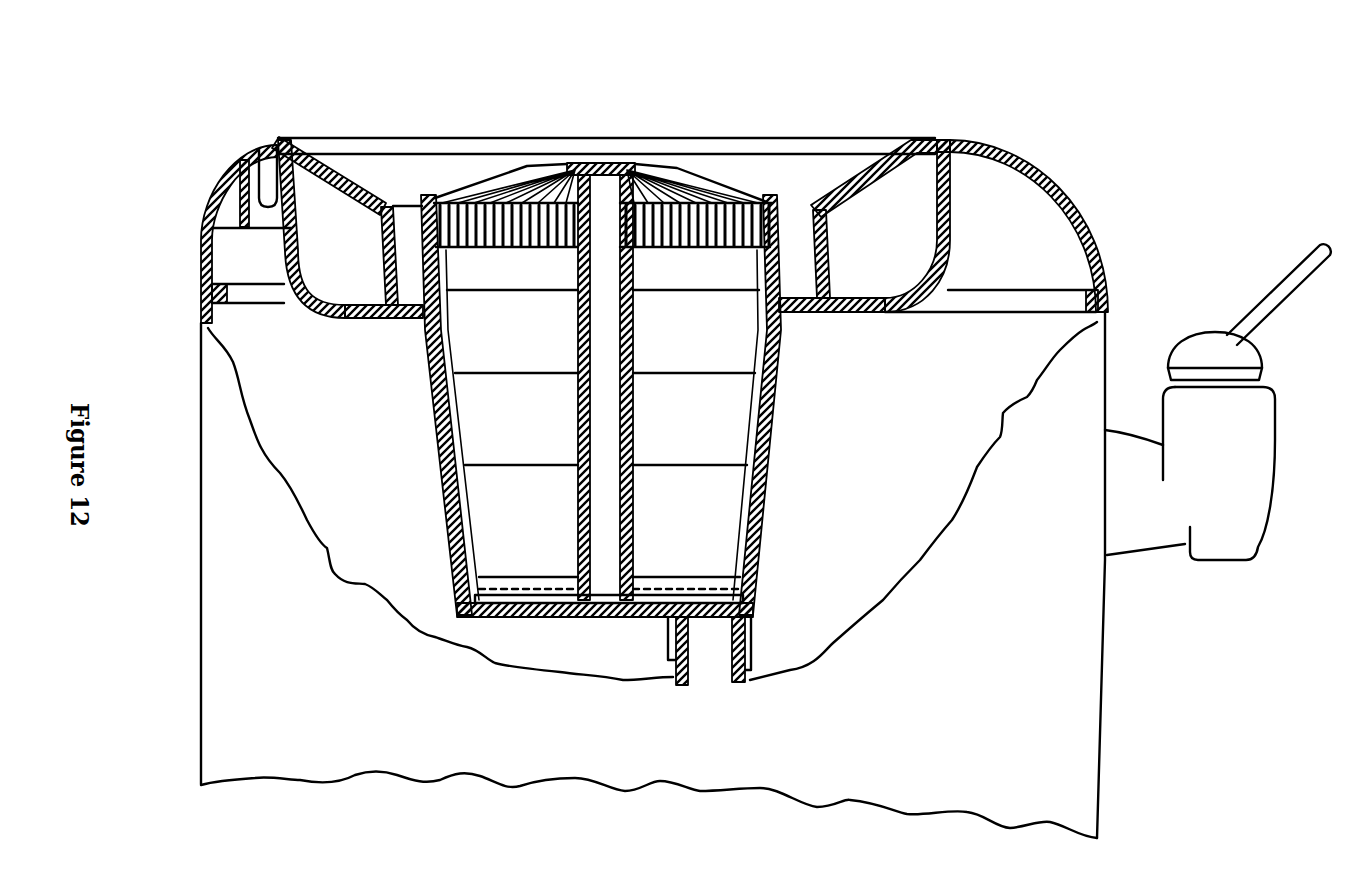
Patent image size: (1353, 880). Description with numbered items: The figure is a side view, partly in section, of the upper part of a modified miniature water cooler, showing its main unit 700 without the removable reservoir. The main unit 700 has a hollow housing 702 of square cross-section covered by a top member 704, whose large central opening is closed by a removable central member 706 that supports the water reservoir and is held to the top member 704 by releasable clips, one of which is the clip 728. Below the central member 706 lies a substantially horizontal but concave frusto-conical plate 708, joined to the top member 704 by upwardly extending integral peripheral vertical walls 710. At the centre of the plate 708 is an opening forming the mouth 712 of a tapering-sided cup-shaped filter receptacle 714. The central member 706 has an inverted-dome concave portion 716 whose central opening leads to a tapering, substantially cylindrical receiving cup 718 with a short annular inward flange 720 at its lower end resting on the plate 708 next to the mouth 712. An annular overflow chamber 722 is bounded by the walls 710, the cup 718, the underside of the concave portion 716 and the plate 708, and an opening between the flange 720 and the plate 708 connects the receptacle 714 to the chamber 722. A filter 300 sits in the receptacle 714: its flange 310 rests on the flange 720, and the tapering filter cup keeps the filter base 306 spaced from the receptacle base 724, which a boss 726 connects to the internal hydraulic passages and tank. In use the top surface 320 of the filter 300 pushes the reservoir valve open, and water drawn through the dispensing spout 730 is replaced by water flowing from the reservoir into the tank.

The filter 300 is at (433, 428).
The base of the filter 306 is at (547, 593).
The flange of the filter cup 310 is at (430, 203).
The top surface of the filter 320 is at (583, 165).
The main unit 700 is at (1128, 205).
The hollow housing 702 is at (240, 622).
The top member 704 is at (1003, 153).
The removable central member 706 is at (930, 143).
The frusto-conical plate 708 is at (888, 314).
The peripheral vertical walls 710 is at (279, 268).
The mouth of the filter receptacle 712 is at (455, 322).
The filter receptacle 714 is at (443, 493).
The concave portion 716 is at (357, 200).
The receiving cup 718 is at (820, 280).
The annular inward flange 720 is at (393, 323).
The annular overflow chamber 722 is at (868, 233).
The base of the receptacle 724 is at (548, 593).
The boss 726 is at (755, 643).
The releasable clip 728 is at (256, 165).
The dispensing spout 730 is at (1220, 547).